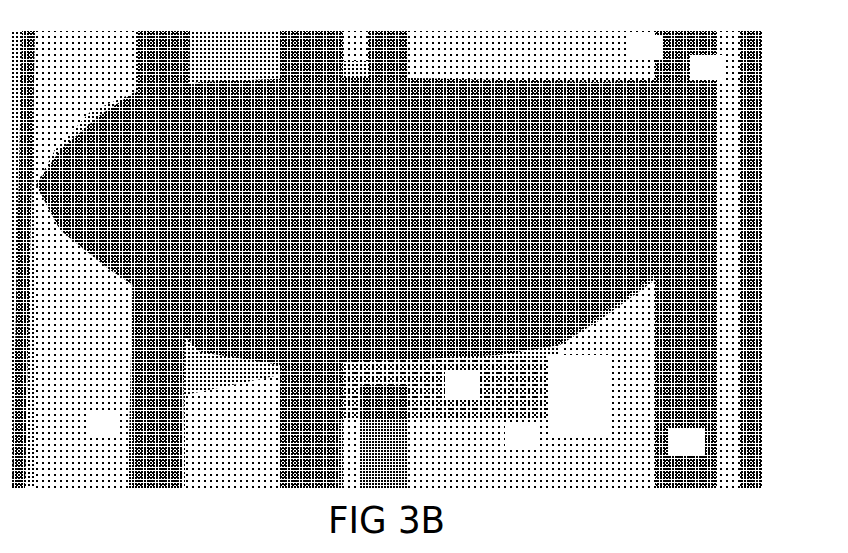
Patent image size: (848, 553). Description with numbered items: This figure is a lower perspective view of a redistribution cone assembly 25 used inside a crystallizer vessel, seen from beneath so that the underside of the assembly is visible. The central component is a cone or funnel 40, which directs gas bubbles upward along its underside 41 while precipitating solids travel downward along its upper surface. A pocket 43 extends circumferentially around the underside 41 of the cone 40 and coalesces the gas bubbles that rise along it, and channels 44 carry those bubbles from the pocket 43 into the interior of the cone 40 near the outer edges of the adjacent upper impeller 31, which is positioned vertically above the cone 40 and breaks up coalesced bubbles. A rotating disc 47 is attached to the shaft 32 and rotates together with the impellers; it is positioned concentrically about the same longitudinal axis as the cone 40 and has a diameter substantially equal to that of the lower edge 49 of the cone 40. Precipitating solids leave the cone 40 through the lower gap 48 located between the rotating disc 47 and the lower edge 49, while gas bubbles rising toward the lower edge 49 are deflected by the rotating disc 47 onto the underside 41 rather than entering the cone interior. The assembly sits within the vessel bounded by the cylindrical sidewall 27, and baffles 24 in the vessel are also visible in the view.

The redistribution cone assembly 25 is at (91, 66).
The upper impeller 31 is at (509, 66).
The channels 44 is at (655, 135).
The pocket 43 is at (701, 124).
The cylindrical sidewall 27 is at (758, 335).
The cone 40 is at (114, 292).
The underside 41 is at (205, 352).
The rotating disc 47 is at (476, 398).
The lower edge 49 is at (515, 350).
The lower gap 48 is at (573, 358).
The baffles 24 is at (700, 455).
The shaft 32 is at (407, 448).